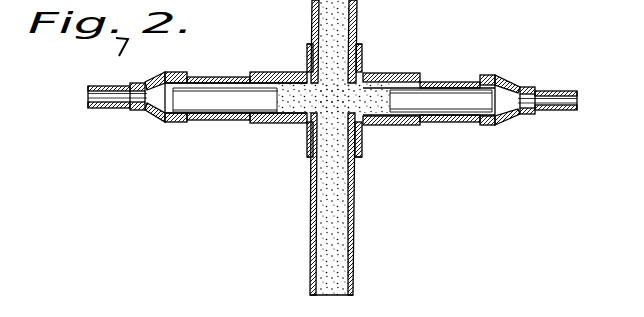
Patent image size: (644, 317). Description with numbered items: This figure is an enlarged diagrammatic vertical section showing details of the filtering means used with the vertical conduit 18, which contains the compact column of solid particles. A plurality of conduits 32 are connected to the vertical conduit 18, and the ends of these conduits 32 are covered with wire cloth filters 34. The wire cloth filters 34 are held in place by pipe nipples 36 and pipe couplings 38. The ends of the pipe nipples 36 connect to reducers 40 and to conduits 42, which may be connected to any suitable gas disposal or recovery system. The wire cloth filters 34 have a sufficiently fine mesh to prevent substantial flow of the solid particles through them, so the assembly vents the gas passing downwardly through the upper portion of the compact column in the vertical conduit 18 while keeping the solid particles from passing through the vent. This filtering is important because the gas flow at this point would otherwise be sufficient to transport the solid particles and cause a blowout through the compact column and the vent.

The vertical conduit 18 is at (311, 210).
The conduits 32 is at (304, 124).
The wire cloth filters 34 is at (276, 97).
The pipe nipples 36 is at (207, 119).
The pipe couplings 38 is at (279, 73).
The reducers 40 is at (157, 117).
The conduits 42 is at (103, 108).